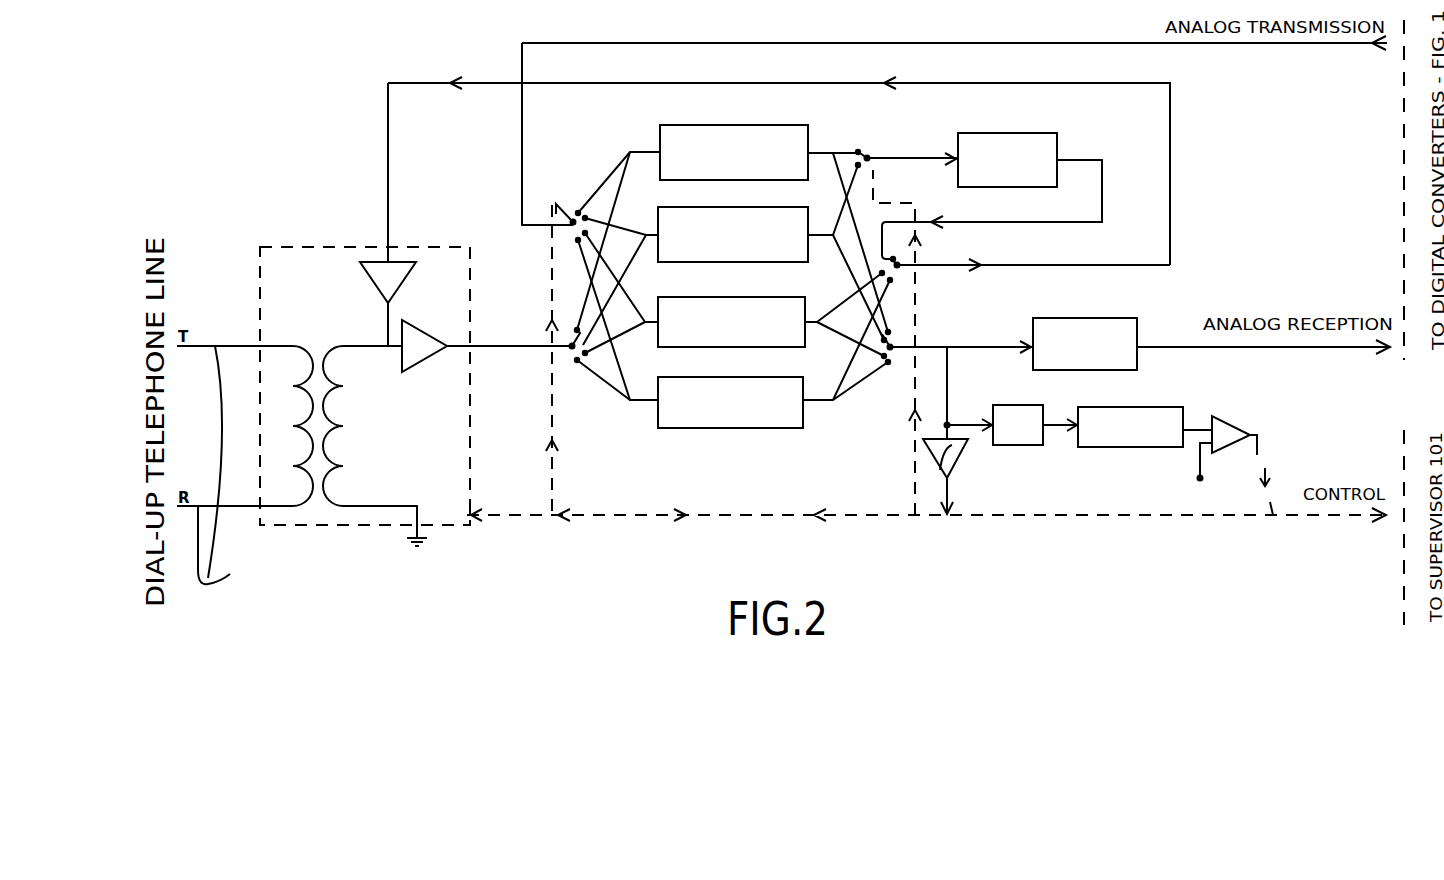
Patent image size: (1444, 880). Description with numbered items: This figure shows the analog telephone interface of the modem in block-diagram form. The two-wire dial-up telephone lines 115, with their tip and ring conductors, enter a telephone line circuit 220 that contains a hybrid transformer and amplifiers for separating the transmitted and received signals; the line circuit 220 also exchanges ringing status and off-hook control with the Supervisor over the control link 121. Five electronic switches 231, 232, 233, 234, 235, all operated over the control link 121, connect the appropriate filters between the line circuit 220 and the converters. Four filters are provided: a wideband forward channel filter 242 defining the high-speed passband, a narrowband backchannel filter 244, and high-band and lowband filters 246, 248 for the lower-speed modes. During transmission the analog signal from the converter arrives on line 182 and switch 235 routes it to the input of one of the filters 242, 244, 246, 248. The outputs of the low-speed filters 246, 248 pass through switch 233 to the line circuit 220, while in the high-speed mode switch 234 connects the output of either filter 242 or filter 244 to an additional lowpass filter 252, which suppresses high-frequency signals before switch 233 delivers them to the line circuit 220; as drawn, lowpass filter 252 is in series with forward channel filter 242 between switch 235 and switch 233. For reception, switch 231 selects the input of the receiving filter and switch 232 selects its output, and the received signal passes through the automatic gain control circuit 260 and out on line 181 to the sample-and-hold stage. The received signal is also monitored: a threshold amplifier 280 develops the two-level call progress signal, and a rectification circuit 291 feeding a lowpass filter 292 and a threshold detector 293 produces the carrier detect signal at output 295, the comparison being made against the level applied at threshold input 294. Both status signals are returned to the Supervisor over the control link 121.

The telephone lines 115 is at (235, 467).
The control link 121 is at (1000, 516).
The line 181 is at (1283, 347).
The line 182 is at (1282, 43).
The telephone line circuit 220 is at (360, 245).
The electronic switch 231 is at (575, 352).
The electronic switch 232 is at (892, 352).
The electronic switch 233 is at (900, 268).
The electronic switch 234 is at (868, 150).
The electronic switch 235 is at (574, 232).
The forward channel filter 242 is at (806, 130).
The backchannel filter 244 is at (768, 207).
The high-band filter 246 is at (762, 297).
The lowband filter 248 is at (760, 377).
The lowpass filter 252 is at (995, 133).
The automatic gain control circuit 260 is at (1060, 370).
The threshold amplifier 280 is at (935, 458).
The rectification circuit 291 is at (1020, 445).
The lowpass filter 292 is at (1120, 447).
The threshold detector 293 is at (1228, 449).
The threshold input 294 is at (1200, 478).
The output 295 is at (1262, 447).